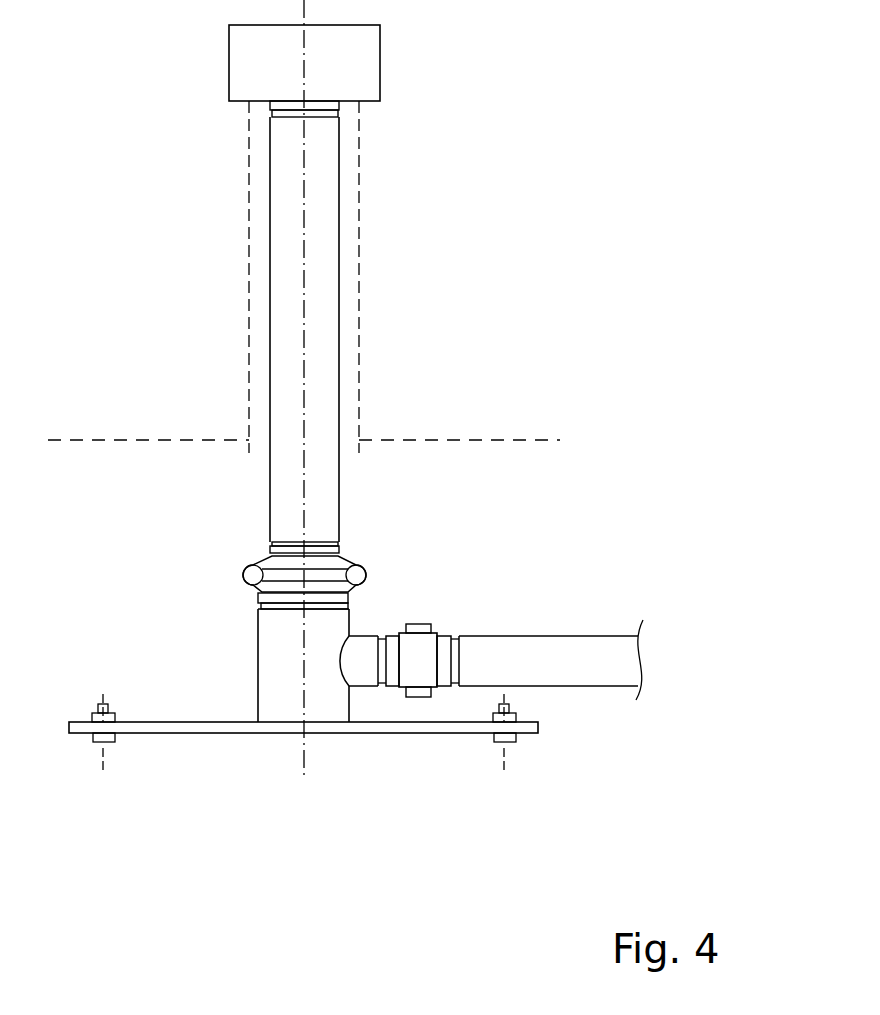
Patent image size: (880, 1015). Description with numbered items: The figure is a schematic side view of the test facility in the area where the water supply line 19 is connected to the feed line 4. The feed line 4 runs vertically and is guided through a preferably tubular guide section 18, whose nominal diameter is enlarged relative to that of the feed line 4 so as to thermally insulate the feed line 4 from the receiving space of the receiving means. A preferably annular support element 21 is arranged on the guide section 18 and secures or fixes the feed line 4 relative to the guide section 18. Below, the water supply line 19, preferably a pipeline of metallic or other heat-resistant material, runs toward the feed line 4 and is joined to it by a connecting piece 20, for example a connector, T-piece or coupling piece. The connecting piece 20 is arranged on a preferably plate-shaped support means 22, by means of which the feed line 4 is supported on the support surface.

The feed line 4 is at (328, 289).
The guide section 18 is at (249, 183).
The water supply line 19 is at (535, 645).
The connecting piece 20 is at (279, 662).
The support element 21 is at (367, 62).
The support means 22 is at (168, 730).